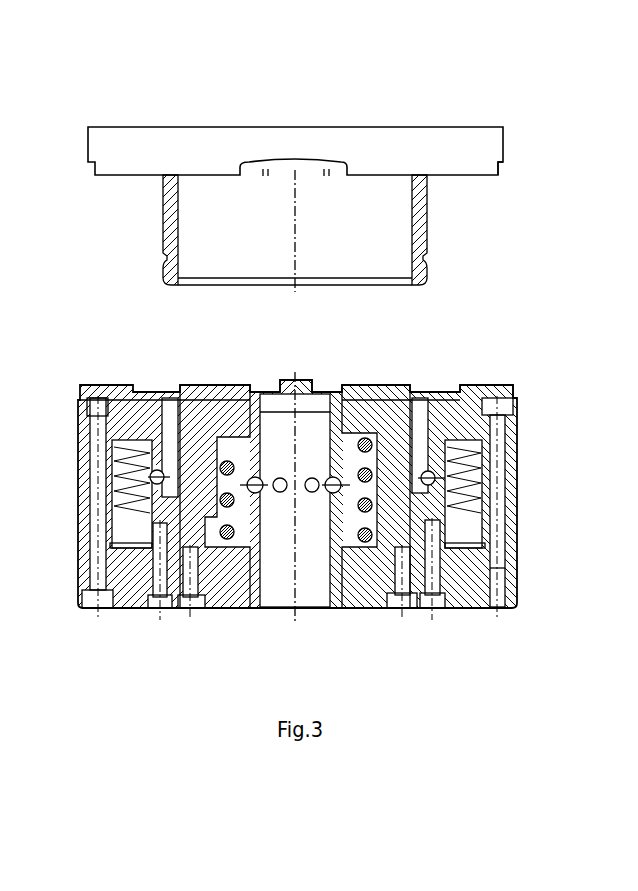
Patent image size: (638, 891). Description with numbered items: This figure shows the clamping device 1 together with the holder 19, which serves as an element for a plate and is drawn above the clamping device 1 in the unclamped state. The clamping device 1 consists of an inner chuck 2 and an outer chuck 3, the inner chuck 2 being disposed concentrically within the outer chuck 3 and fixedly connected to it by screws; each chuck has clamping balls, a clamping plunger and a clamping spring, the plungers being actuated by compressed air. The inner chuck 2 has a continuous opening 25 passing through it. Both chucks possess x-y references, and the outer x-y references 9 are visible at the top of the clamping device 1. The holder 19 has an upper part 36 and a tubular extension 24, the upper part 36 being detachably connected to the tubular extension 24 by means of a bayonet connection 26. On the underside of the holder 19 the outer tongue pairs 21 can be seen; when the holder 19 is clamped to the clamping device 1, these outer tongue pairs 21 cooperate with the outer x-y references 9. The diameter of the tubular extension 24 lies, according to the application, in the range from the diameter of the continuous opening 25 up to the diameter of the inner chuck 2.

The clamping device 1 is at (494, 357).
The inner chuck 2 is at (208, 420).
The outer chuck 3 is at (97, 400).
The outer x-y references 9 is at (478, 372).
The holder 19 is at (167, 108).
The outer tongue pairs 21 is at (327, 172).
The tubular extension 24 is at (163, 222).
The continuous opening 25 is at (282, 435).
The bayonet connection 26 is at (476, 163).
The upper part 36 is at (420, 142).